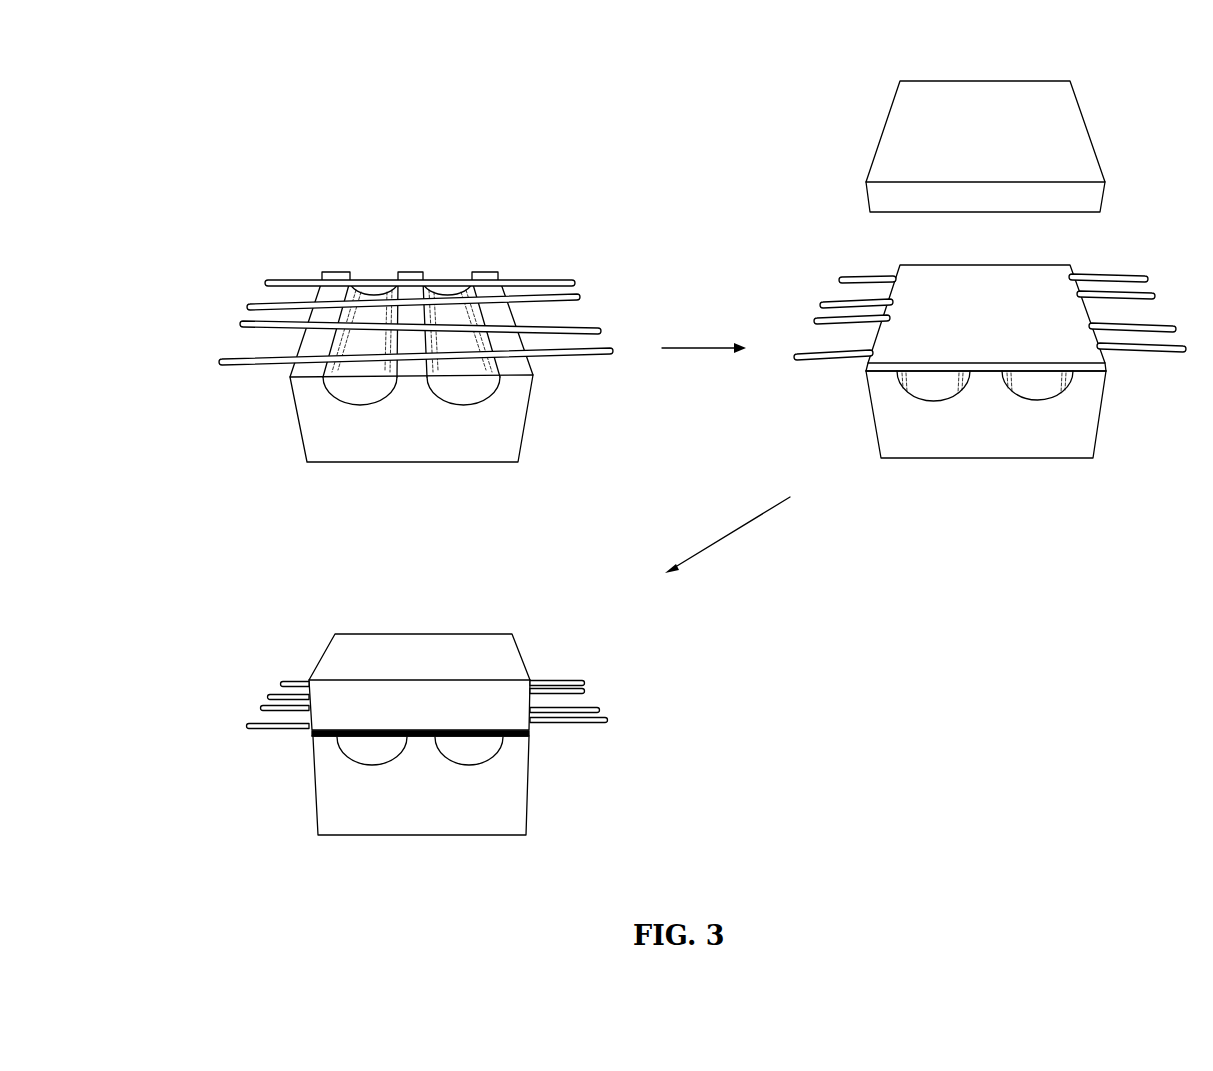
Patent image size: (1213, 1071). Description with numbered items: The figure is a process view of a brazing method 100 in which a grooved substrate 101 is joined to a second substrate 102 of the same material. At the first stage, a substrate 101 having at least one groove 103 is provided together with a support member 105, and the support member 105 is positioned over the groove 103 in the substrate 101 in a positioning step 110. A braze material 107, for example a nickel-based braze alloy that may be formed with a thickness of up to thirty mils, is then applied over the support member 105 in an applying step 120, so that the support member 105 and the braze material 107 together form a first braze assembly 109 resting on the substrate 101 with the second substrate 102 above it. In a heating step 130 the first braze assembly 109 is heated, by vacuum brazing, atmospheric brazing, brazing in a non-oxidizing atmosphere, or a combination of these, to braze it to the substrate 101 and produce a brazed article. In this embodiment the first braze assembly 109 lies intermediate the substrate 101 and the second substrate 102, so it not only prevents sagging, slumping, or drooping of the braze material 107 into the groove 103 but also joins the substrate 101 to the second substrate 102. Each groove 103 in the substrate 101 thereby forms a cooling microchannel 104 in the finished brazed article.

The brazing method 100 is at (271, 228).
The positioning step 110 is at (366, 255).
The braze material applying step 120 is at (702, 346).
The heating step 130 is at (731, 527).
The substrate 101 is at (492, 277).
The second substrate 102 is at (1095, 193).
The groove 103 is at (470, 392).
The cooling microchannel 104 is at (357, 750).
The support member 105 is at (272, 294).
The braze material 107 is at (1040, 263).
The first braze assembly 109 is at (1108, 368).